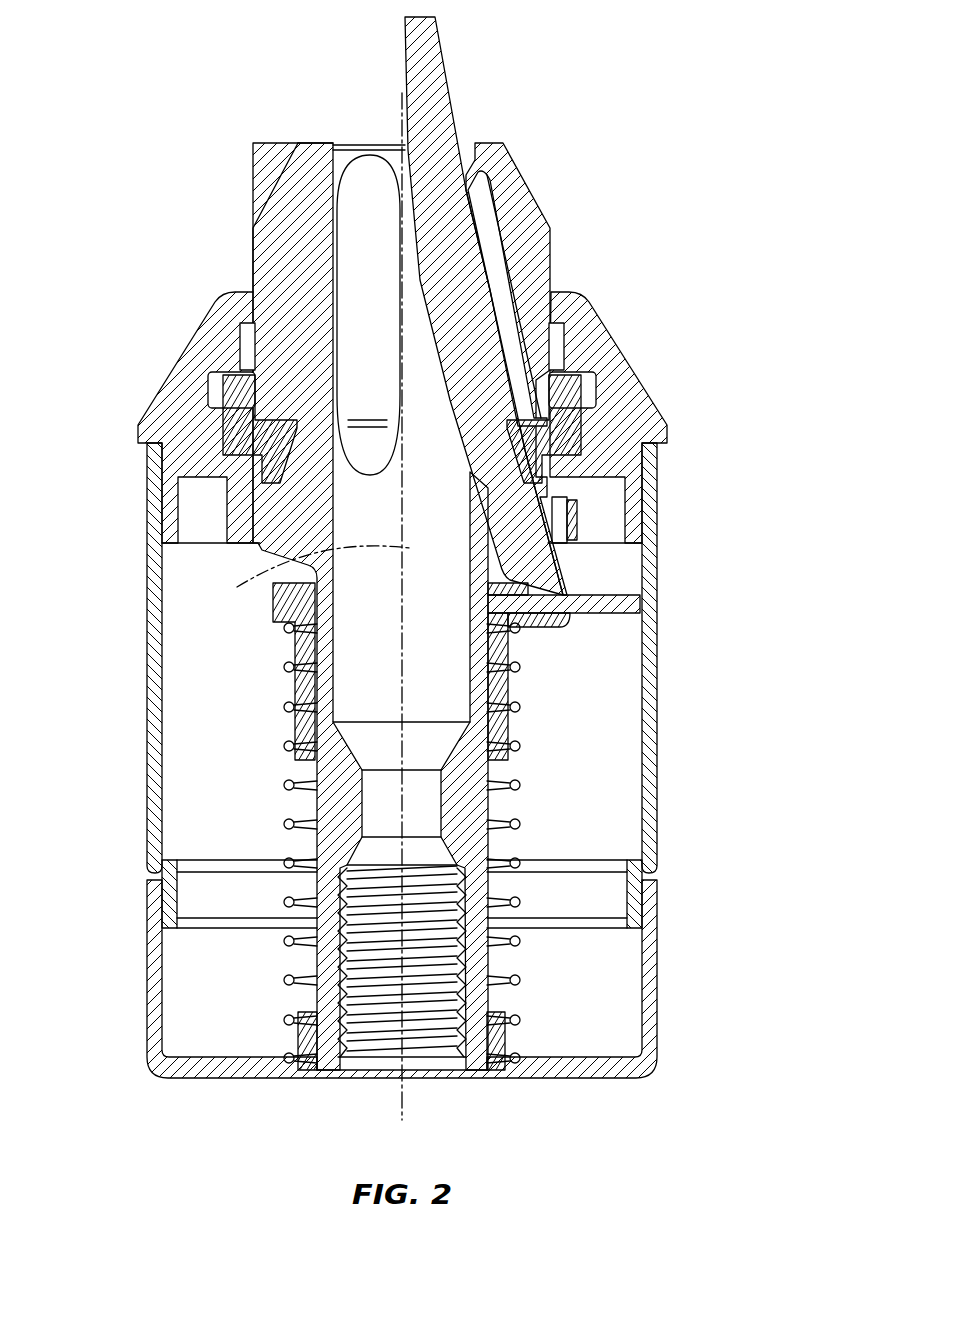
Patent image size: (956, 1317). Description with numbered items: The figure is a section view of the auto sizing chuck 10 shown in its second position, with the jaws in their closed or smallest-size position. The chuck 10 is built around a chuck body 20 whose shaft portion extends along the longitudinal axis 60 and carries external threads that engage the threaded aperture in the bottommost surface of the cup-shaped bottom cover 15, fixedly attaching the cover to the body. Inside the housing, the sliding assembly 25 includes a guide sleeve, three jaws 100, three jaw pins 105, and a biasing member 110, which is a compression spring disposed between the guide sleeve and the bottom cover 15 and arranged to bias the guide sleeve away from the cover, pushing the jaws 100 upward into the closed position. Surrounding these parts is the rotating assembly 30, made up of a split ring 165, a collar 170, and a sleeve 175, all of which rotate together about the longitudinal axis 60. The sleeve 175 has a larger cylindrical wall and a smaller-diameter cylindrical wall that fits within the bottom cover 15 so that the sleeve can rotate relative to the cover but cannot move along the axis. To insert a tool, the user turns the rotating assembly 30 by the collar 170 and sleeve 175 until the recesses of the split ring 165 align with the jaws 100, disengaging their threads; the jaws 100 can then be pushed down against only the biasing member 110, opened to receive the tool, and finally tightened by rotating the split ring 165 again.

The auto sizing chuck 10 is at (626, 82).
The bottom cover 15 is at (657, 978).
The chuck body 20 is at (533, 227).
The sliding assembly 25 is at (549, 657).
The rotating assembly 30 is at (122, 455).
The longitudinal axis 60 is at (308, 577).
The jaw 100 is at (437, 72).
The jaw pin 105 is at (610, 615).
The biasing member 110 is at (288, 822).
The split ring 165 is at (572, 423).
The collar 170 is at (183, 380).
The sleeve 175 is at (147, 703).